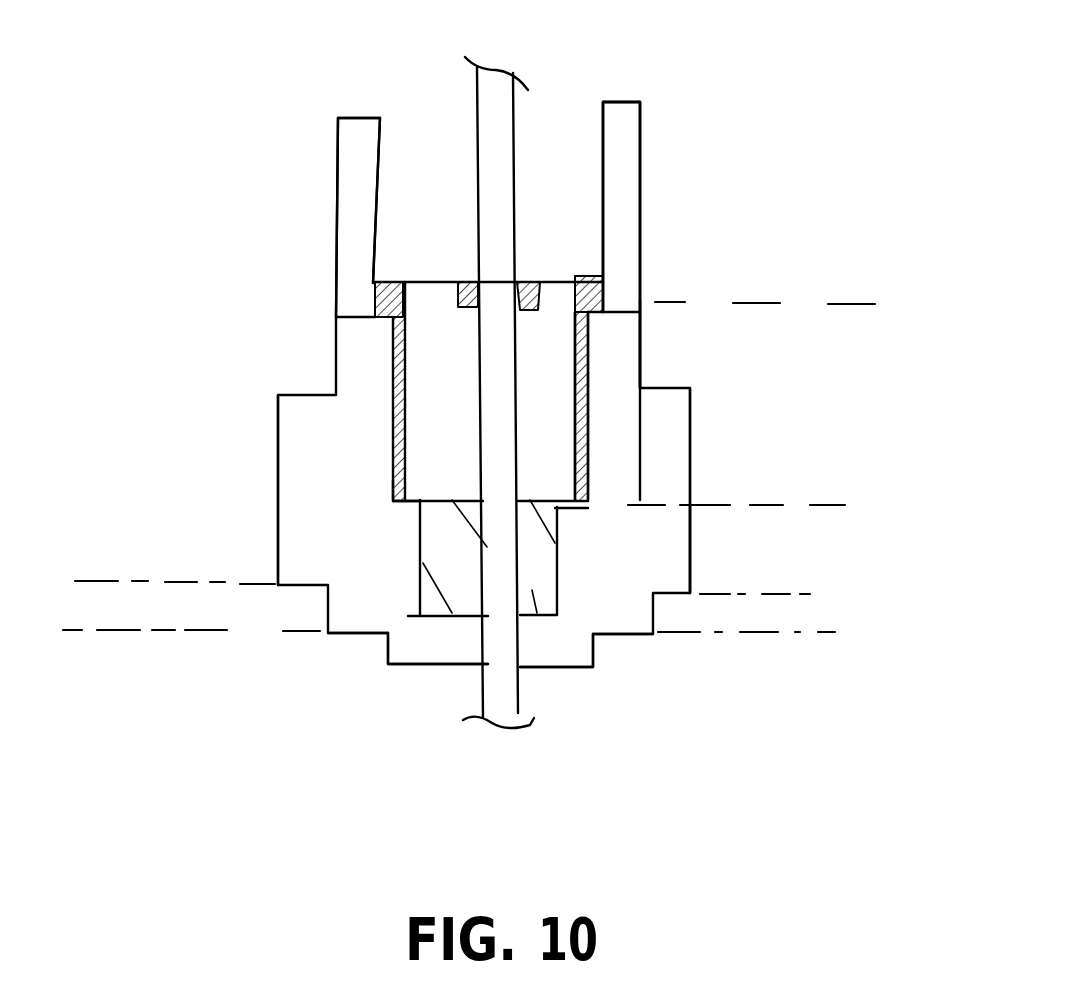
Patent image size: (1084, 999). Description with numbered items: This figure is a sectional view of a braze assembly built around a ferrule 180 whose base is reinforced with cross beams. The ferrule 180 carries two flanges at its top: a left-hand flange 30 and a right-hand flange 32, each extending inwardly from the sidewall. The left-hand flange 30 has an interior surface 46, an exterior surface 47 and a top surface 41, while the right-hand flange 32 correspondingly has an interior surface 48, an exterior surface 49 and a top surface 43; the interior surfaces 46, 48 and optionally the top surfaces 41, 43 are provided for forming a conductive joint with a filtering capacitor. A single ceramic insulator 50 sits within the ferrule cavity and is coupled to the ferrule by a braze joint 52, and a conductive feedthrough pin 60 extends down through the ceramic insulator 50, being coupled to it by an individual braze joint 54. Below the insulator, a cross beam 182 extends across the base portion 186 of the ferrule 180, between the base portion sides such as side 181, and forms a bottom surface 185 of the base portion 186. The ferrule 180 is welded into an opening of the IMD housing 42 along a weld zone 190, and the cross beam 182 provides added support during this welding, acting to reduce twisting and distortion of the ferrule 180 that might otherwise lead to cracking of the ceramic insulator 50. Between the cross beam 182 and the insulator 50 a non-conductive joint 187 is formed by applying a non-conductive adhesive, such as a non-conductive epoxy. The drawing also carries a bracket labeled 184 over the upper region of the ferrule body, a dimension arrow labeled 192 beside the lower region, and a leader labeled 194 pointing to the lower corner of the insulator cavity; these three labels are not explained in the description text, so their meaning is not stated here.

The left-hand flange 30 is at (348, 180).
The right-hand flange 32 is at (622, 161).
The top surface of flange 41 is at (357, 117).
The top surface of flange 43 is at (622, 100).
The interior surface of flange 46 is at (377, 202).
The exterior surface of flange 47 is at (336, 249).
The interior surface of flange 48 is at (603, 200).
The exterior surface of flange 49 is at (640, 215).
The conductive feedthrough pin 60 is at (491, 102).
The ceramic insulator 50 is at (427, 388).
The braze joint 52 is at (580, 377).
The braze joint 54 is at (532, 282).
The ferrule 180 is at (796, 462).
The base portion side 181 is at (168, 412).
The cross beam 182 is at (547, 671).
The upper body portion 184 is at (816, 327).
The bottom surface 185 is at (438, 666).
The base portion 186 is at (836, 677).
The non-conductive joint 187 is at (537, 570).
The weld zone 190 is at (359, 655).
The height dimension 192 is at (577, 524).
The cavity bottom corner 194 is at (393, 495).
The IMD housing 42 is at (253, 612).